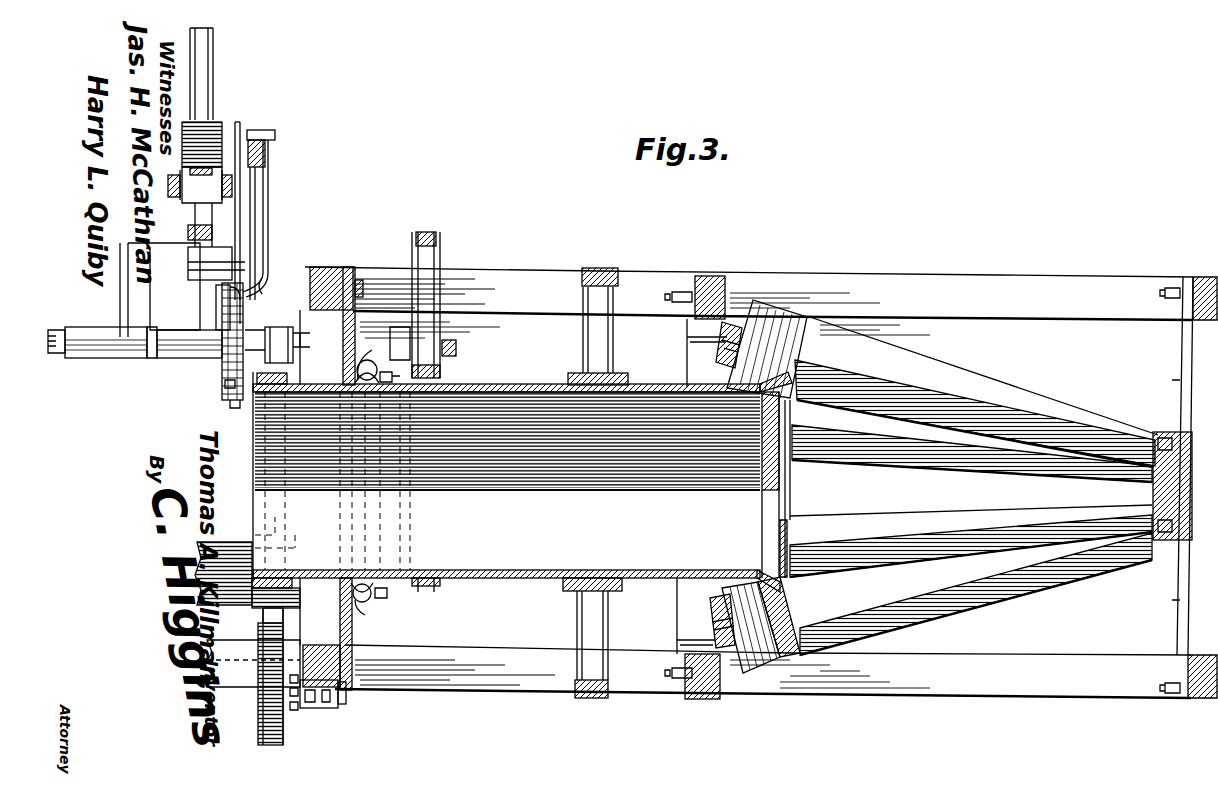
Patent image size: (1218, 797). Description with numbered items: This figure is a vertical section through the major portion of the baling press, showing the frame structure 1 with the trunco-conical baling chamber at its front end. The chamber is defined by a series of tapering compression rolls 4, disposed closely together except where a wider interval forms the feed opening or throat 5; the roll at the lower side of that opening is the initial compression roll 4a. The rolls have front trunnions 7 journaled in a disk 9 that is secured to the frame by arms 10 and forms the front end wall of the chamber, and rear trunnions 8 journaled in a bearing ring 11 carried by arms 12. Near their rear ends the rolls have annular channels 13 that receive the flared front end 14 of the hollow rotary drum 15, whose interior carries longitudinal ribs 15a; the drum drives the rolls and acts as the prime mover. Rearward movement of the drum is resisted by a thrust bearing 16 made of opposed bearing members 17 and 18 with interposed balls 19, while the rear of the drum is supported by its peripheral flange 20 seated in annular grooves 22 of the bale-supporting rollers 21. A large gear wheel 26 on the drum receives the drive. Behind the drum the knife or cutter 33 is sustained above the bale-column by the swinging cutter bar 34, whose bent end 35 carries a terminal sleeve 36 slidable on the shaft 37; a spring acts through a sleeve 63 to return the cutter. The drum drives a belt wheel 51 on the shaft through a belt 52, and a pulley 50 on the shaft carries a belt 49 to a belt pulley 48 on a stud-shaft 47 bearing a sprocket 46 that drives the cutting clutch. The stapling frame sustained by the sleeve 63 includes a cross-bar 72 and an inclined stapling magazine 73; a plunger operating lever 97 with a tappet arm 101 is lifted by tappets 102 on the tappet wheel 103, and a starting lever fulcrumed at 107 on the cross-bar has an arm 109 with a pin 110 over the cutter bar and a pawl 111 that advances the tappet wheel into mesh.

The frame structure 1 is at (761, 477).
The tapering compression rolls 4 is at (975, 485).
The initial compression roll 4a is at (971, 541).
The feed opening or throat 5 is at (894, 486).
The front trunnions 7 is at (1168, 432).
The rear trunnions 8 is at (715, 350).
The disk 9 is at (1150, 490).
The arms 10 is at (1162, 488).
The bearing ring 11 is at (712, 370).
The arms 12 is at (683, 335).
The annular channels 13 is at (775, 325).
The flared front end 14 is at (780, 472).
The hollow rotary drum 15 is at (506, 477).
The internal longitudinal ribs 15a is at (508, 400).
The thrust bearing 16 is at (385, 600).
The bearing member 17 is at (342, 372).
The bearing member 18 is at (372, 362).
The balls 19 is at (366, 481).
The peripheral flange 20 is at (258, 386).
The bale-supporting rollers 21 is at (230, 542).
The annular grooves 22 is at (262, 608).
The gear wheel 26 is at (598, 267).
The knife or cutter 33 is at (308, 272).
The swinging cutter bar 34 is at (266, 150).
The bent end of cutter bar 35 is at (268, 212).
The terminal sleeve 36 is at (180, 360).
The shaft 37 is at (457, 348).
The sprocket 46 is at (300, 712).
The stud-shaft 47 is at (346, 694).
The belt pulley 48 is at (258, 712).
The belt 49 is at (262, 330).
The pulley 50 is at (283, 326).
The belt wheel 51 is at (436, 240).
The belt 52 is at (440, 258).
The sleeve 63 is at (95, 327).
The cross-bar 72 is at (190, 200).
The stapling magazine 73 is at (213, 78).
The plunger operating lever 97 is at (176, 248).
The tappet arm 101 is at (216, 296).
The tappets 102 is at (222, 316).
The tappet wheel 103 is at (230, 404).
The fulcrum 107 is at (186, 232).
The arm 109 is at (241, 170).
The pin 110 is at (262, 130).
The pawl 111 is at (188, 264).